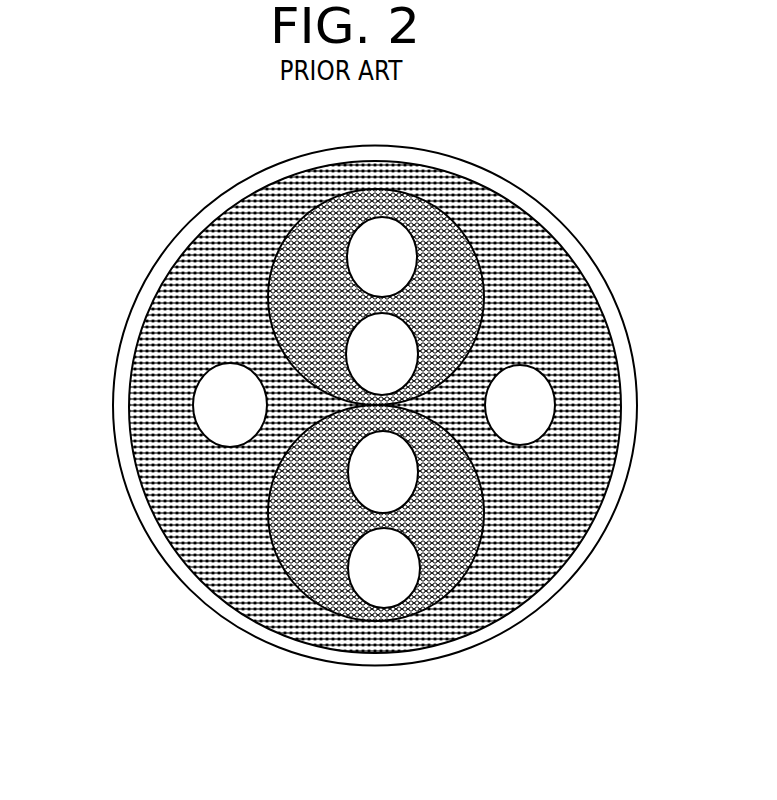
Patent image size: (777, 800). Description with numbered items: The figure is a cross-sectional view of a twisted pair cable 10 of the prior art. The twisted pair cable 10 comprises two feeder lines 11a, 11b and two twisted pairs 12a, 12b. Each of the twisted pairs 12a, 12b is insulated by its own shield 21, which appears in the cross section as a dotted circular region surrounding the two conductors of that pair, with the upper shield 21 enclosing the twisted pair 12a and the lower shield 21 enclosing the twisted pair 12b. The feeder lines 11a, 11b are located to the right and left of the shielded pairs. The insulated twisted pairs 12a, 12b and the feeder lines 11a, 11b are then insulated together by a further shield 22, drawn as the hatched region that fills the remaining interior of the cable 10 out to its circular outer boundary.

The twisted pair cable 10 is at (172, 237).
The feeder line 11a is at (543, 392).
The feeder line 11b is at (207, 399).
The twisted pair 12a is at (405, 240).
The twisted pair 12b is at (387, 598).
The shield 21 is at (450, 586).
The shield 22 is at (210, 553).